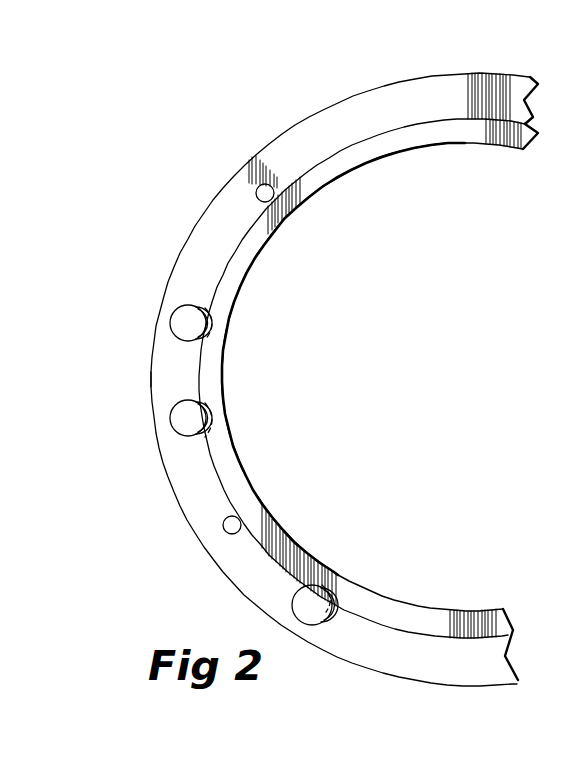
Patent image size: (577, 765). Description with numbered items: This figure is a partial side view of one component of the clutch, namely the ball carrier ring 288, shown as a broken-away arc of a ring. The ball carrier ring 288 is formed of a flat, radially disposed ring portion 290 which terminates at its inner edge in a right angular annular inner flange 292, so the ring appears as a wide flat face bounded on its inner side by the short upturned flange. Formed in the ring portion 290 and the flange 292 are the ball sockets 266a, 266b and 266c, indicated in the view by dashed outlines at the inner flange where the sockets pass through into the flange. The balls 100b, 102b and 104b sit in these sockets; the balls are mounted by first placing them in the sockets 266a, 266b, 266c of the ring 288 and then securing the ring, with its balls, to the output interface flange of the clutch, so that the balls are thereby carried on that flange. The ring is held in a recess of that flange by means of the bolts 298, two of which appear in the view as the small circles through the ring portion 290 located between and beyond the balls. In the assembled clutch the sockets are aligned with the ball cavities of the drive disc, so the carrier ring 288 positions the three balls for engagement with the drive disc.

The ball carrier ring 288 is at (268, 129).
The ring portion 290 is at (166, 374).
The annular inner flange 292 is at (208, 359).
The bolts 298 is at (257, 193).
The ball 100b is at (180, 313).
The ball 102b is at (178, 420).
The ball 104b is at (300, 605).
The ball socket 266a is at (212, 322).
The ball socket 266b is at (212, 412).
The ball socket 266c is at (336, 600).